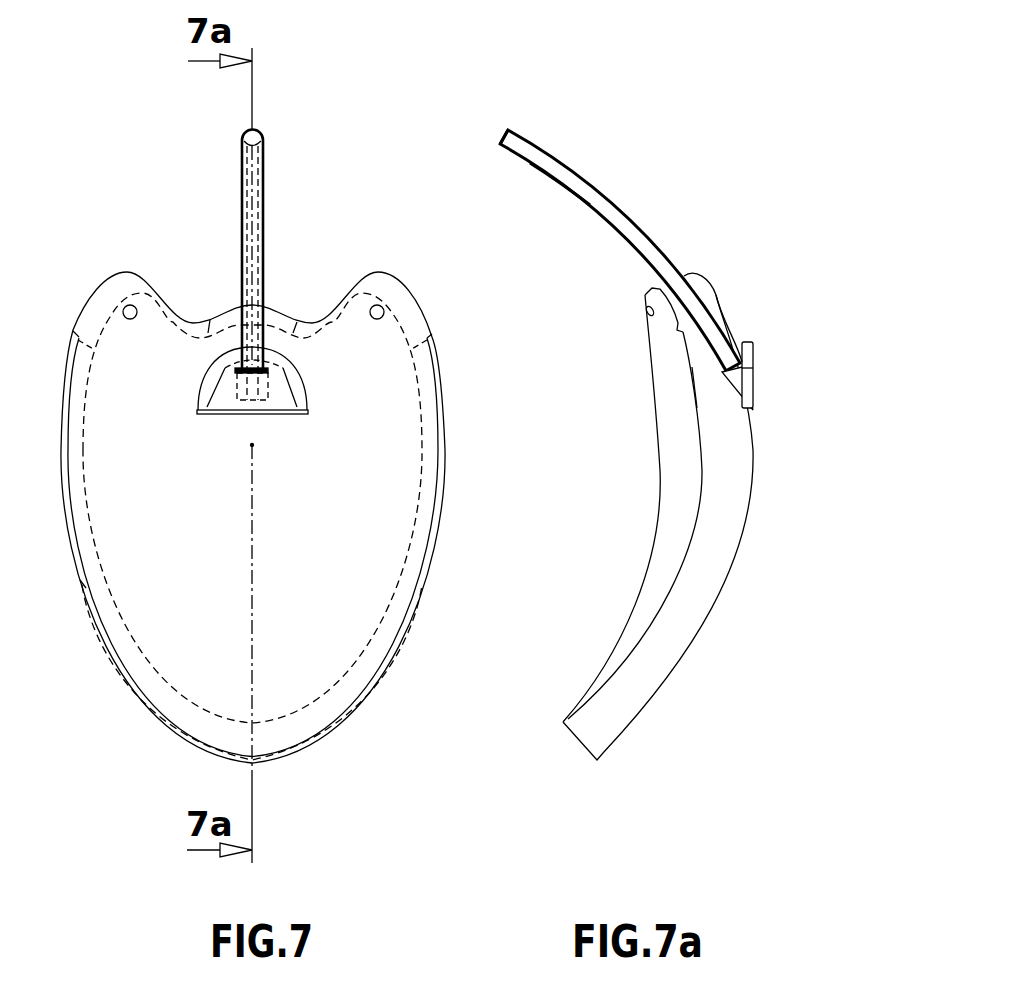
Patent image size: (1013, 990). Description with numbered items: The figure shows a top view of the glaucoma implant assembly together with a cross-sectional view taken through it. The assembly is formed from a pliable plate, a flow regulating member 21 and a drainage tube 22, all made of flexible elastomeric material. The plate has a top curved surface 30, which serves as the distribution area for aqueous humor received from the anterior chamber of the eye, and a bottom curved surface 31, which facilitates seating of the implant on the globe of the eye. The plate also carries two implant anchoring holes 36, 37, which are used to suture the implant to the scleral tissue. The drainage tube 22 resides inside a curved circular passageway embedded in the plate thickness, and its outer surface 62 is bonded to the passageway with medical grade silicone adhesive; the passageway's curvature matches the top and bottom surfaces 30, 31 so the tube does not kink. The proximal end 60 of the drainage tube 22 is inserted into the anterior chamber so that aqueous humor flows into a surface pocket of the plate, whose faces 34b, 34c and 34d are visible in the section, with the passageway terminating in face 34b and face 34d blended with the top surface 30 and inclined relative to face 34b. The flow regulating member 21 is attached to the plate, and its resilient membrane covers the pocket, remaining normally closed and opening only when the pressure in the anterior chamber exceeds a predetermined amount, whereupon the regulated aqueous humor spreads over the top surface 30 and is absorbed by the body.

In FIG. 7A, the flow regulating member 21 is at (752, 373).
In FIG. 7A, the drainage tube 22 is at (628, 219).
In FIG. 7A, the top curved surface 30 is at (745, 522).
In FIG. 7A, the bottom curved surface 31 is at (675, 450).
In FIG. 7A, the face 34b is at (741, 350).
In FIG. 7A, the face 34c is at (740, 378).
In FIG. 7A, the face 34d is at (727, 378).
In FIG. 7, the implant anchoring hole 36 is at (123, 310).
In FIG. 7, the implant anchoring hole 37 is at (384, 311).
In FIG. 7A, the proximal end 60 is at (503, 137).
In FIG. 7A, the outer surface 62 is at (560, 187).